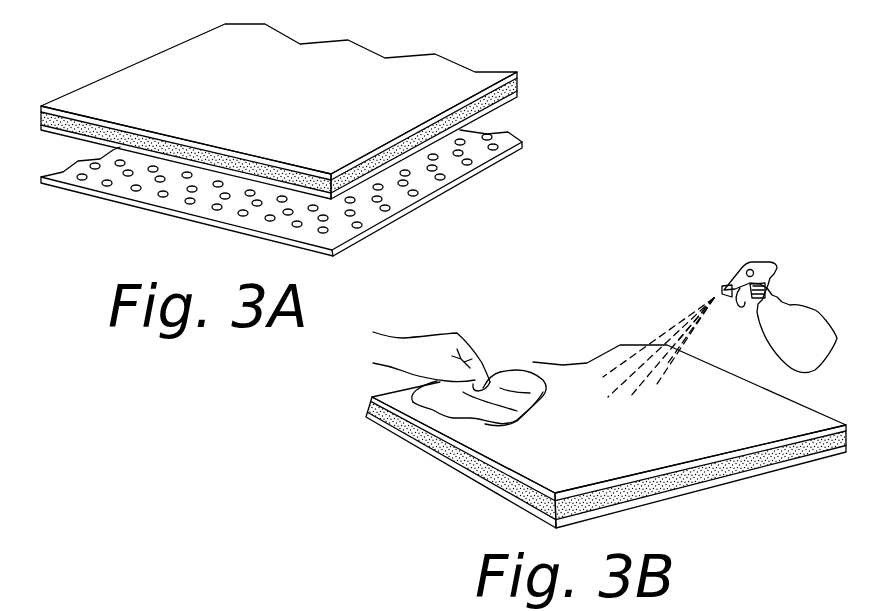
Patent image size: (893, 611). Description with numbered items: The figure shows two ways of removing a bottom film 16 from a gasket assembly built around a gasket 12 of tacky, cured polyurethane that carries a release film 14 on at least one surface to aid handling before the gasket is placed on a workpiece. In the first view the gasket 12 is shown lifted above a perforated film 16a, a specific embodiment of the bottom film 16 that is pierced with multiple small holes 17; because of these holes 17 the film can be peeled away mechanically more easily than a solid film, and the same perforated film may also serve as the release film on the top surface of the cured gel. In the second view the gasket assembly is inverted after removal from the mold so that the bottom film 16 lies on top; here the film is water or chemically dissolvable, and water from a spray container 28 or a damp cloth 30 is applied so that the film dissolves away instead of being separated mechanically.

In FIG. 3A, the gasket 12 is at (267, 111).
In FIG. 3B, the gasket 12 is at (620, 438).
In FIG. 3A, the release film 14 is at (268, 103).
In FIG. 3B, the release film 14 is at (693, 494).
In FIG. 3B, the bottom film 16 is at (601, 456).
In FIG. 3A, the perforated film 16a is at (281, 193).
In FIG. 3A, the holes 17 is at (413, 189).
In FIG. 3B, the spray container 28 is at (790, 304).
In FIG. 3B, the damp cloth 30 is at (500, 376).